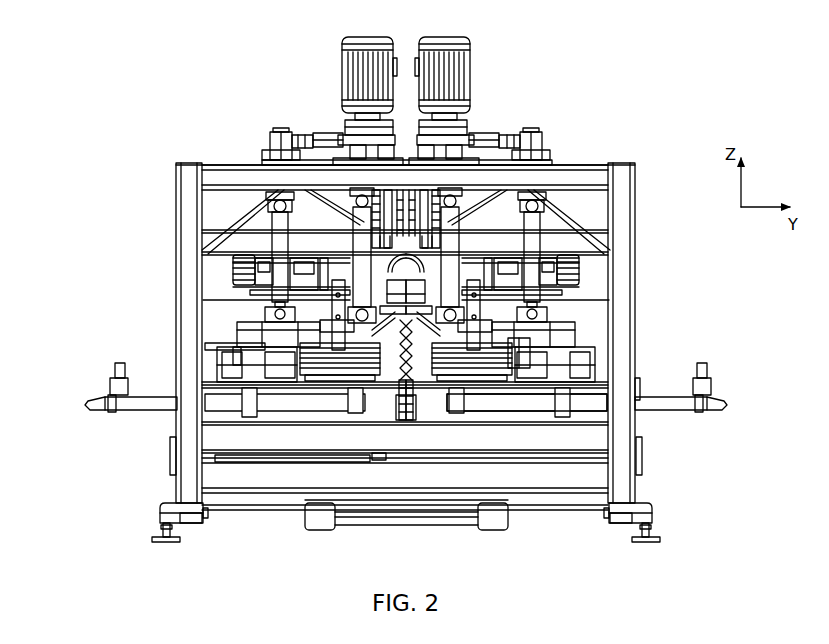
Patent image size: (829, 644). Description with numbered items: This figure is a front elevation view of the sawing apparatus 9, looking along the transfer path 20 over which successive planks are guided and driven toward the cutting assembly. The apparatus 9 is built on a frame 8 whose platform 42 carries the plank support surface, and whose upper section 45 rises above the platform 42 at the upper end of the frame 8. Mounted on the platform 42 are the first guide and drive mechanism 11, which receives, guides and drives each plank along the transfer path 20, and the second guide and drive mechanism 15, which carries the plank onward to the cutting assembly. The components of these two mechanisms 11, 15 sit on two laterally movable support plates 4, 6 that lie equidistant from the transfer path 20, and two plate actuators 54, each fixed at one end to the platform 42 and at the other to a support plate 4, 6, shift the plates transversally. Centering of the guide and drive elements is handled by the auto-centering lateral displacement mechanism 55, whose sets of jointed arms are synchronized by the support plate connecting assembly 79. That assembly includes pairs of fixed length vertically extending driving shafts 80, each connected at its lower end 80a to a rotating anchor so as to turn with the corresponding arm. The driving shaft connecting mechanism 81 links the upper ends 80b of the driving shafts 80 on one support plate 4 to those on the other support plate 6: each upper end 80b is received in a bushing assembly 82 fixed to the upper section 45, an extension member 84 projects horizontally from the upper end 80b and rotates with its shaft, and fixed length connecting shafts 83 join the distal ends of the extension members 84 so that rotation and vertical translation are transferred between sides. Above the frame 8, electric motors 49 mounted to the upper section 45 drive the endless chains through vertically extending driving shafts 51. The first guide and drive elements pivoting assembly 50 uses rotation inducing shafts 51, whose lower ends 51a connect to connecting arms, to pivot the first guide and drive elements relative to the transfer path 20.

The sawing apparatus 9 is at (45, 80).
The electric motor 49 is at (367, 40).
The driving shaft connecting mechanism 81 is at (275, 116).
The extension member 84 is at (284, 136).
The connecting shaft 83 is at (333, 137).
The upper end of driving shaft 80b is at (272, 133).
The bushing assembly 82 is at (264, 150).
The first guide and drive elements pivoting assembly 50 is at (431, 246).
The upper section 45 is at (637, 162).
The frame 8 is at (623, 182).
The support plate connecting assembly 79 is at (250, 238).
The vertically extending driving shaft 80 is at (280, 282).
The rotation inducing shaft 51 is at (362, 302).
The lower end of driving shaft 80a is at (274, 327).
The auto-centering lateral displacement mechanism 55 is at (249, 341).
The first guide and drive mechanism 11 is at (233, 355).
The plate actuator 54 is at (144, 398).
The lower end of rotation inducing shaft 51a is at (330, 323).
The second guide and drive mechanism 15 is at (520, 348).
The platform 42 is at (642, 381).
The first support plate 4 is at (293, 385).
The transfer path 20 is at (415, 397).
The second support plate 6 is at (527, 388).